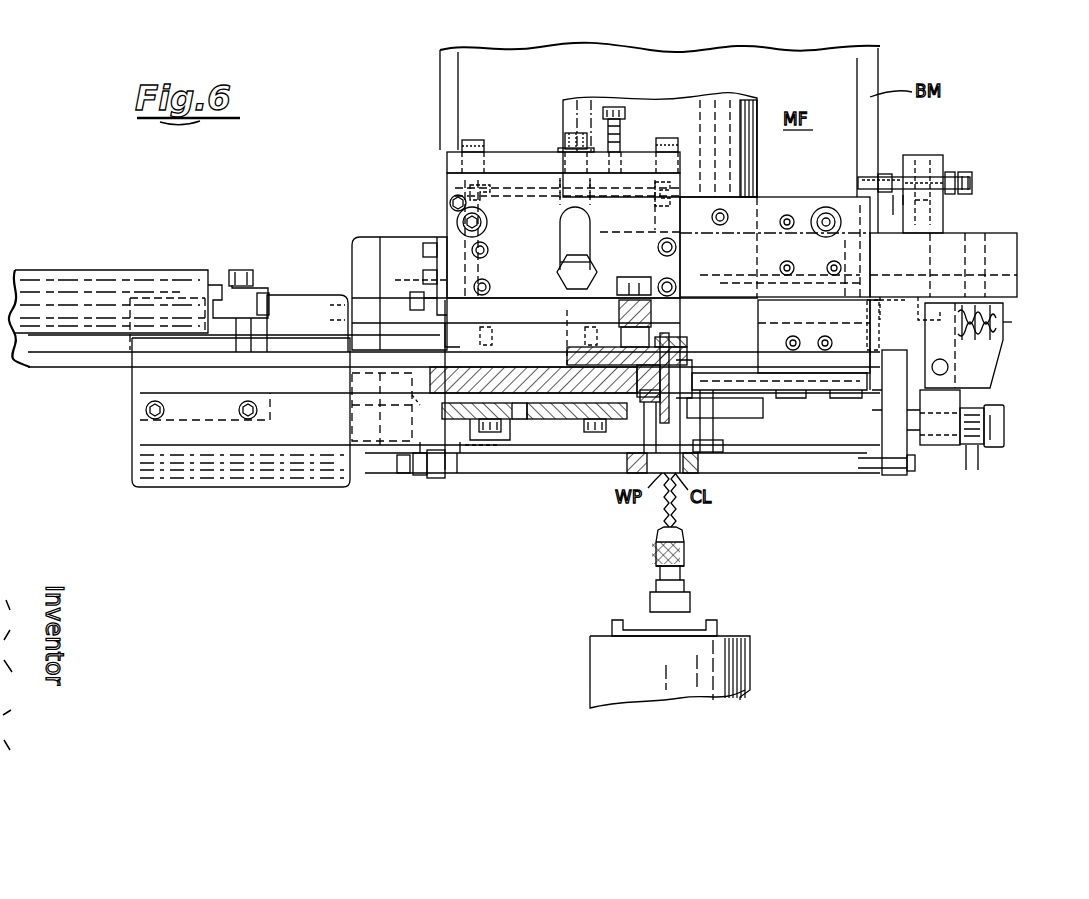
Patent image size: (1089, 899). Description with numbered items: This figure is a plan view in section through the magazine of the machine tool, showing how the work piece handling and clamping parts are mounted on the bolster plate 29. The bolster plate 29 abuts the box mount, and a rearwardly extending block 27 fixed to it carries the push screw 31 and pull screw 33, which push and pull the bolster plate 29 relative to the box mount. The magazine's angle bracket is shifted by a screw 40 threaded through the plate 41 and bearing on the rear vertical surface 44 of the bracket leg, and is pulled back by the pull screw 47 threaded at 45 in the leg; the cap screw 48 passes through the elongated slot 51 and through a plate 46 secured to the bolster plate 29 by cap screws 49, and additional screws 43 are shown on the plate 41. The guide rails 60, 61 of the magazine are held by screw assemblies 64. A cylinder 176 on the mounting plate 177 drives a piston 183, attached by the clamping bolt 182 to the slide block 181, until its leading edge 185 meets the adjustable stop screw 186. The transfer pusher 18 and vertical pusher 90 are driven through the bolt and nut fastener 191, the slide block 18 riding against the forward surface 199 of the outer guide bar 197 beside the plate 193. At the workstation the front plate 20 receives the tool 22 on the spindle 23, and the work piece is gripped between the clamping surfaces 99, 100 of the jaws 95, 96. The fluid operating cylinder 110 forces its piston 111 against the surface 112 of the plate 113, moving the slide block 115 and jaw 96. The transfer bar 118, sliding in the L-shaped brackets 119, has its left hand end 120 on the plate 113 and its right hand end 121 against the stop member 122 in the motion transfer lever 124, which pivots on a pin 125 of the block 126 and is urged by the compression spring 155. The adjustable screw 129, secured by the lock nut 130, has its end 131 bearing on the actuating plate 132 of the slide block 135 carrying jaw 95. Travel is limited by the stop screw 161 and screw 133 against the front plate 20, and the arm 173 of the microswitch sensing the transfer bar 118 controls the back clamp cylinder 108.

The transfer pusher 18 is at (660, 400).
The front plate 20 is at (480, 470).
The tool 22 is at (672, 515).
The spindle 23 is at (716, 665).
The block 27 is at (935, 158).
The bolster plate 29 is at (408, 240).
The push screw 31 is at (972, 178).
The pull screw 33 is at (875, 178).
The screw 40 is at (614, 107).
The plate 41 is at (490, 160).
The cap screw 43 is at (472, 140).
The rear vertical surface 44 is at (630, 180).
The threaded portion 45 is at (595, 200).
The plate 46 is at (640, 262).
The pull screw 47 is at (567, 135).
The cap screw 48 is at (566, 275).
The cap screws 49 is at (488, 285).
The elongated slot 51 is at (585, 226).
The guide rail 60 is at (470, 430).
The guide rail 61 is at (545, 420).
The screw assemblies 64 is at (501, 425).
The vertical pusher 90 is at (686, 384).
The clamping jaw 95 is at (727, 450).
The clamping jaw 96 is at (610, 445).
The clamping surface 99 is at (655, 436).
The clamping surface 100 is at (688, 410).
The back clamp cylinder 108 is at (690, 104).
The fluid operating cylinder 110 is at (230, 470).
The piston 111 is at (352, 418).
The surface 112 is at (386, 409).
The plate 113 is at (430, 475).
The slide block 115 is at (538, 440).
The transfer bar 118 is at (735, 308).
The L-shaped brackets 119 is at (1008, 295).
The left hand end 120 is at (468, 340).
The right hand end 121 is at (888, 300).
The stop member 122 is at (935, 300).
The motion transfer lever 124 is at (955, 405).
The pin 125 is at (947, 370).
The block 126 is at (1000, 334).
The adjustable screw 129 is at (995, 440).
The lock nut 130 is at (966, 450).
The end 131 is at (870, 420).
The actuating plate 132 is at (888, 475).
The screw 133 is at (912, 472).
The slide block 135 is at (812, 445).
The compression spring 155 is at (1000, 312).
The stop screw 161 is at (400, 465).
The arm 173 is at (1005, 326).
The cylinder 176 is at (78, 270).
The mounting plate 177 is at (62, 360).
The slide block 181 is at (266, 340).
The clamping bolt 182 is at (242, 270).
The piston 183 is at (222, 290).
The leading edge 185 is at (266, 295).
The stop screw 186 is at (408, 300).
The bolt and nut fastener 191 is at (636, 278).
The plate 193 is at (567, 357).
The outer guide bar 197 is at (672, 348).
The forward surface 199 is at (672, 375).